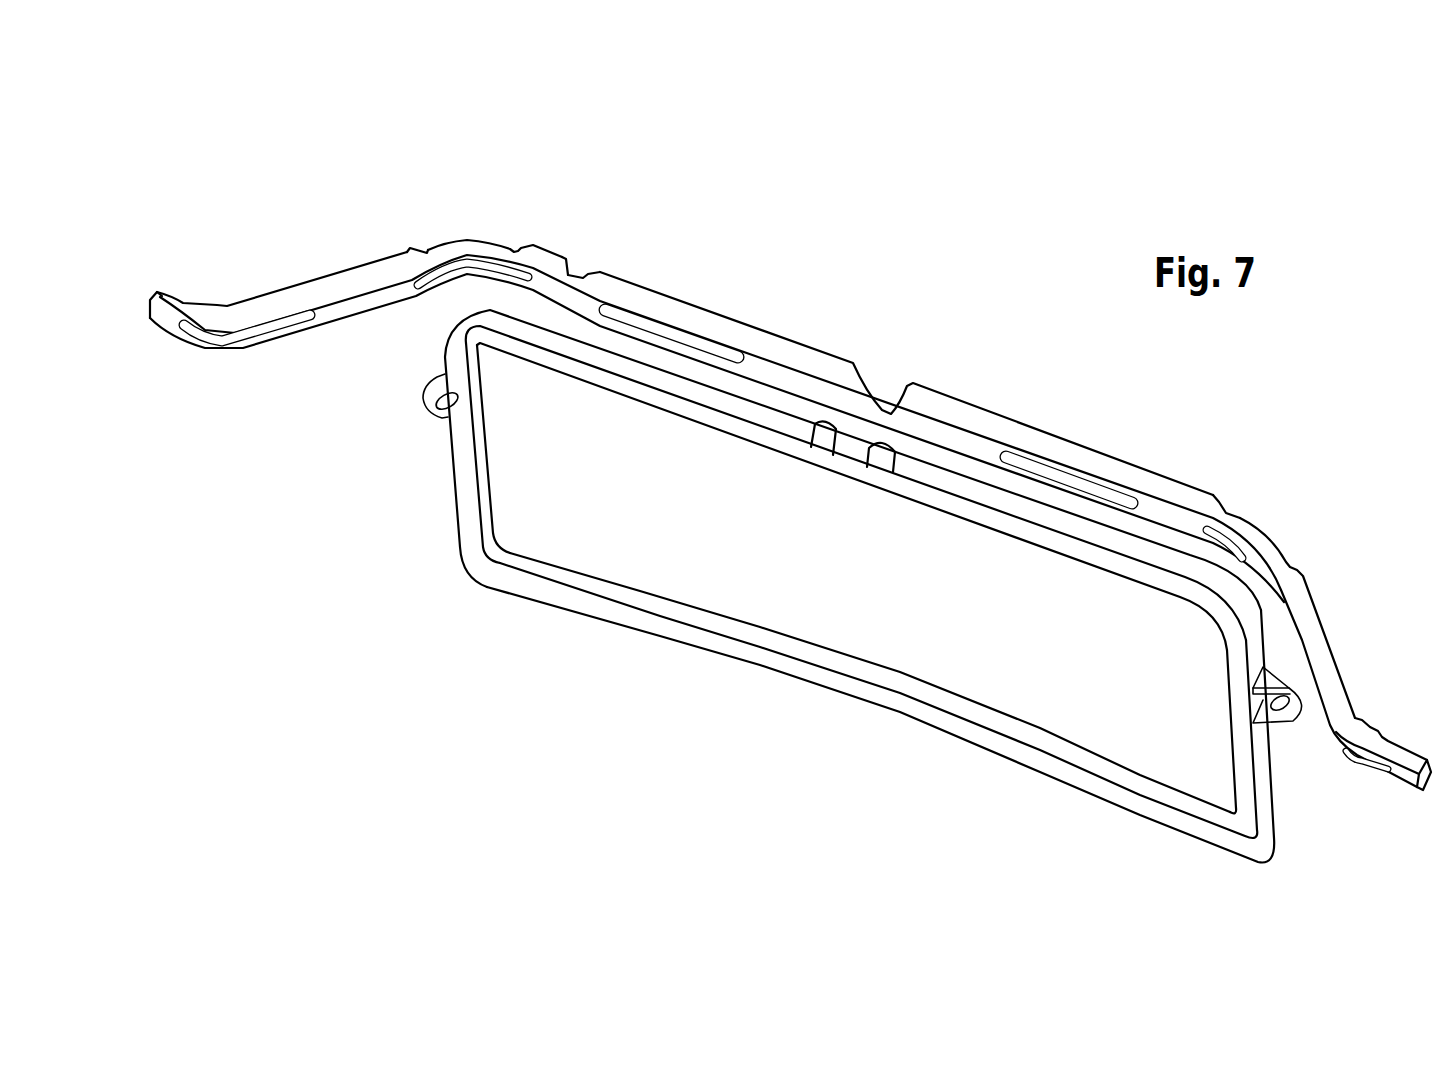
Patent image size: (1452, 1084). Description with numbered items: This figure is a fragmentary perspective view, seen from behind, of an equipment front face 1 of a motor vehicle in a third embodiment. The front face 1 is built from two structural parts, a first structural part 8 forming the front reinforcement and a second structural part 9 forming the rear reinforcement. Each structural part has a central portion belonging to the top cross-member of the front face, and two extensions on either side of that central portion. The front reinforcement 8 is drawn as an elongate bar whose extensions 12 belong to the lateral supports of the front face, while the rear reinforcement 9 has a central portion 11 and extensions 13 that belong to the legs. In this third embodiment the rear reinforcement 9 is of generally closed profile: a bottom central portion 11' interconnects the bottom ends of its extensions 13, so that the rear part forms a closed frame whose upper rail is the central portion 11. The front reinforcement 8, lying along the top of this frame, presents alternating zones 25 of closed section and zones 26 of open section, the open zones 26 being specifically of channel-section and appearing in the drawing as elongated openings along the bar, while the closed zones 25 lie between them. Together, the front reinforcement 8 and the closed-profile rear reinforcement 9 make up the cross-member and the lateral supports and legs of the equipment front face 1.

The equipment front face 1 is at (890, 292).
The first structural part 8 is at (1005, 405).
The second structural part 9 is at (958, 512).
The central portion 11 is at (853, 480).
The bottom central portion 11' is at (880, 708).
The extension 12 is at (327, 285).
The extension 13 is at (462, 470).
The zone of closed section 25 is at (579, 272).
The zone of open section 26 is at (454, 236).